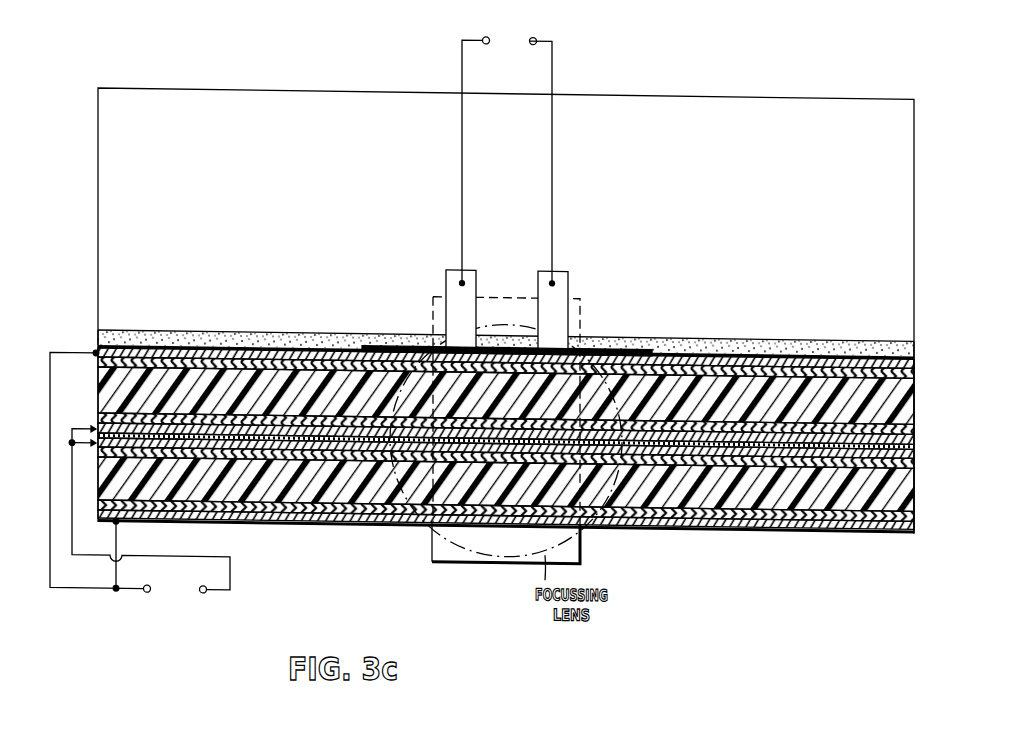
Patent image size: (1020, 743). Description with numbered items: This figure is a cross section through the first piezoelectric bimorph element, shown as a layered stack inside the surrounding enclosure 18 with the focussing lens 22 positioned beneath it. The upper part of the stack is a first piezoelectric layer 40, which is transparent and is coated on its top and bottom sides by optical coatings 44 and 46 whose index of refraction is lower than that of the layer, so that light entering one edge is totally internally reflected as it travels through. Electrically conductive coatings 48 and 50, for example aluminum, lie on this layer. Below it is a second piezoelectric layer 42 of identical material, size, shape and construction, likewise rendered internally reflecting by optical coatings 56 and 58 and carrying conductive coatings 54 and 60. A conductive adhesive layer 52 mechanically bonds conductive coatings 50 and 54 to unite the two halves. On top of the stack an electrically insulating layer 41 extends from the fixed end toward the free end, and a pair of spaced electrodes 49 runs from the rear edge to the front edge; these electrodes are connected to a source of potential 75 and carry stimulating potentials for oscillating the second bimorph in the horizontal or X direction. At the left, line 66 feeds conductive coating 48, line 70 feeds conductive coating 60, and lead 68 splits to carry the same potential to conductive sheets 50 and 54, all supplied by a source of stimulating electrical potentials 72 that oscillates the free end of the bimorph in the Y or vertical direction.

The housing 18 is at (715, 172).
The focussing lens mount 22 is at (447, 546).
The first piezoelectric layer 40 is at (710, 381).
The electrically insulating layer 41 is at (618, 342).
The piezoelectric layer 42 is at (770, 481).
The optical coating 44 is at (317, 362).
The optical coating 46 is at (778, 417).
The electrically conductive coating 48 is at (245, 351).
The spaced electrodes 49 is at (448, 284).
The electrically conductive coating 50 is at (827, 427).
The conductive adhesive layer 52 is at (911, 434).
The electrically conductive coating 54 is at (843, 443).
The optical coating 56 is at (880, 457).
The optical coating 58 is at (653, 509).
The electrically conductive coating 60 is at (704, 515).
The line 66 is at (70, 354).
The lead 68 is at (72, 540).
The line 70 is at (118, 540).
The source of stimulating electrical potentials 72 is at (180, 604).
The source of potential 75 is at (541, 19).